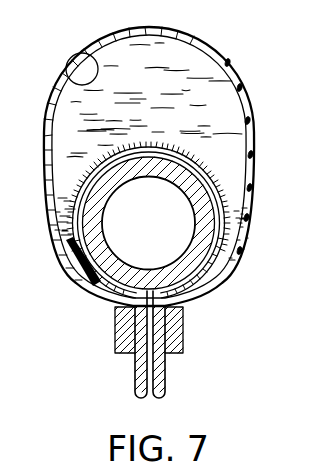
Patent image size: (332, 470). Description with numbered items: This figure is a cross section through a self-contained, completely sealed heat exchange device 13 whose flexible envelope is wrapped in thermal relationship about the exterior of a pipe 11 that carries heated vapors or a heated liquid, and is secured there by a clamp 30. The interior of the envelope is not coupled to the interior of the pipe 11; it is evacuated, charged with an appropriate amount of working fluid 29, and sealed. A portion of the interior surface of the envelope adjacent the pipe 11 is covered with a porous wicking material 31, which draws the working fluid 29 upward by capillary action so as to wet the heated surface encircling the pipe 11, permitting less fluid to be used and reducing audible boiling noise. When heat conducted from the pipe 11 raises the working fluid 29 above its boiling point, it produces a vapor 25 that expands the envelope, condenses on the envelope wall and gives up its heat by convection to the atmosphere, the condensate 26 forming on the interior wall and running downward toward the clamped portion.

The pipe 11 is at (194, 213).
The heat exchange device 13 is at (252, 101).
The vapor 25 is at (197, 80).
The condensate 26 is at (93, 55).
The working fluid 29 is at (252, 213).
The clamp 30 is at (174, 330).
The porous wicking material 31 is at (213, 178).